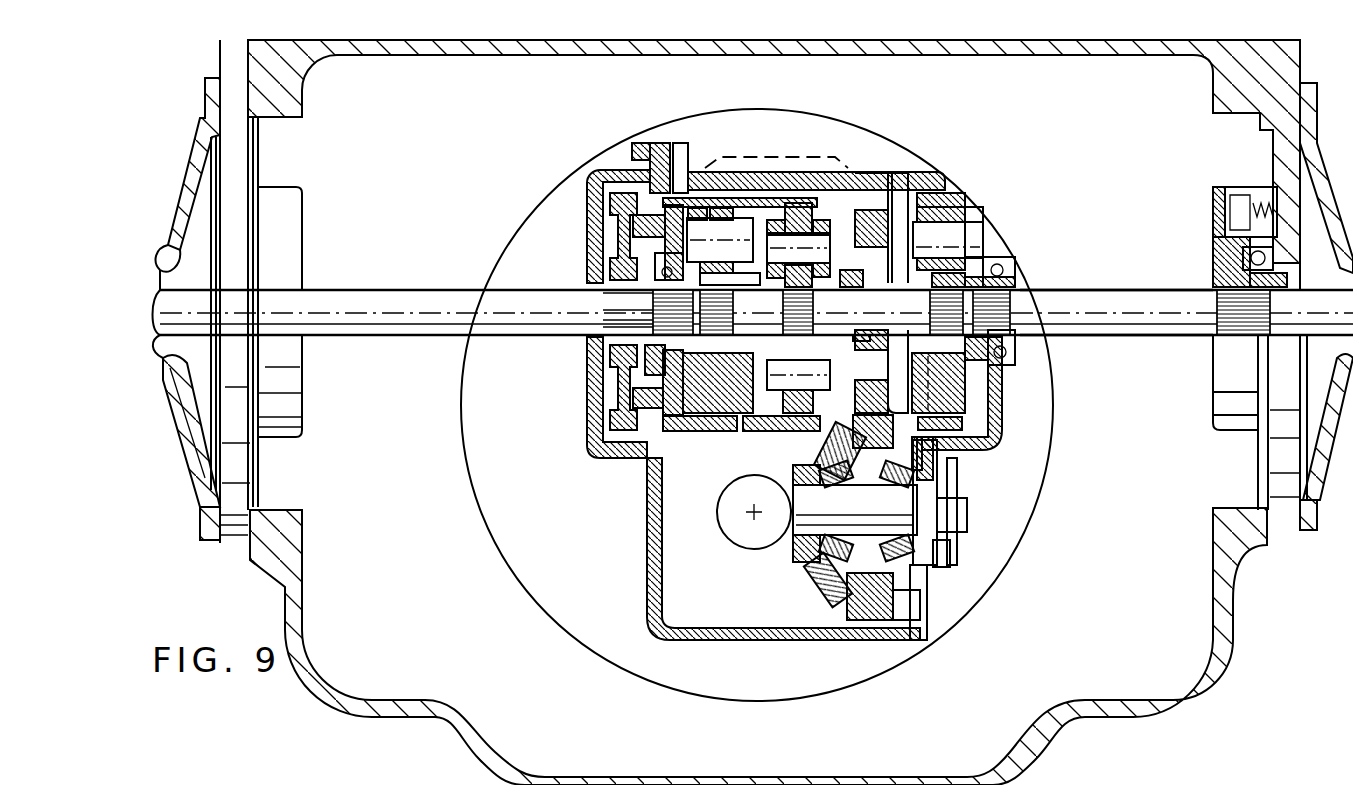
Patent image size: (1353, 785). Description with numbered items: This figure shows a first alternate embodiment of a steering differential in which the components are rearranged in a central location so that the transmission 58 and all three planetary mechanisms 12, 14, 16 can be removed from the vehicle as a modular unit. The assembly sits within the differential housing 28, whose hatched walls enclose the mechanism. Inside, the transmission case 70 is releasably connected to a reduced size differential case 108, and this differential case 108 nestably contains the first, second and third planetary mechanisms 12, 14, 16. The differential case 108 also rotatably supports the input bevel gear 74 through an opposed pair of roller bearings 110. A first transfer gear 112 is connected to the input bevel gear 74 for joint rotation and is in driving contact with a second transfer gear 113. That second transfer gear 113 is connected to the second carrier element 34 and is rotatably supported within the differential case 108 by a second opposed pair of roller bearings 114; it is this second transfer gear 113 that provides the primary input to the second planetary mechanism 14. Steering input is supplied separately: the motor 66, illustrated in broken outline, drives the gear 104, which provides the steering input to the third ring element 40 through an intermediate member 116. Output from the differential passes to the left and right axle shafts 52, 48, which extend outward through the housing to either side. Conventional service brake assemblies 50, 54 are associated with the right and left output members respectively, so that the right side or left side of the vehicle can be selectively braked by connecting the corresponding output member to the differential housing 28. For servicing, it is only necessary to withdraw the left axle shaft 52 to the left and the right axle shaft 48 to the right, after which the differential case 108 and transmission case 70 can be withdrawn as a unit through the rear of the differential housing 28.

The differential housing 28 is at (524, 49).
The service brake assembly 54 is at (314, 204).
The left axle shaft 52 is at (375, 292).
The transmission case 70 is at (515, 230).
The motor 66 is at (787, 163).
The second carrier element 34 is at (835, 210).
The second transfer gear 113 is at (870, 210).
The first planetary mechanism 12 is at (972, 209).
The service brake assembly 50 is at (1214, 194).
The right axle shaft 48 is at (1130, 297).
The second opposed pair of roller bearings 114 is at (862, 336).
The intermediate member 116 is at (640, 400).
The gear 104 is at (597, 444).
The third ring element 40 is at (713, 431).
The third planetary mechanism 16 is at (733, 433).
The second planetary mechanism 14 is at (797, 430).
The differential case 108 is at (648, 531).
The transmission 58 is at (717, 518).
The opposed pair of roller bearings 110 is at (877, 487).
The input bevel gear 74 is at (833, 570).
The first transfer gear 112 is at (870, 597).